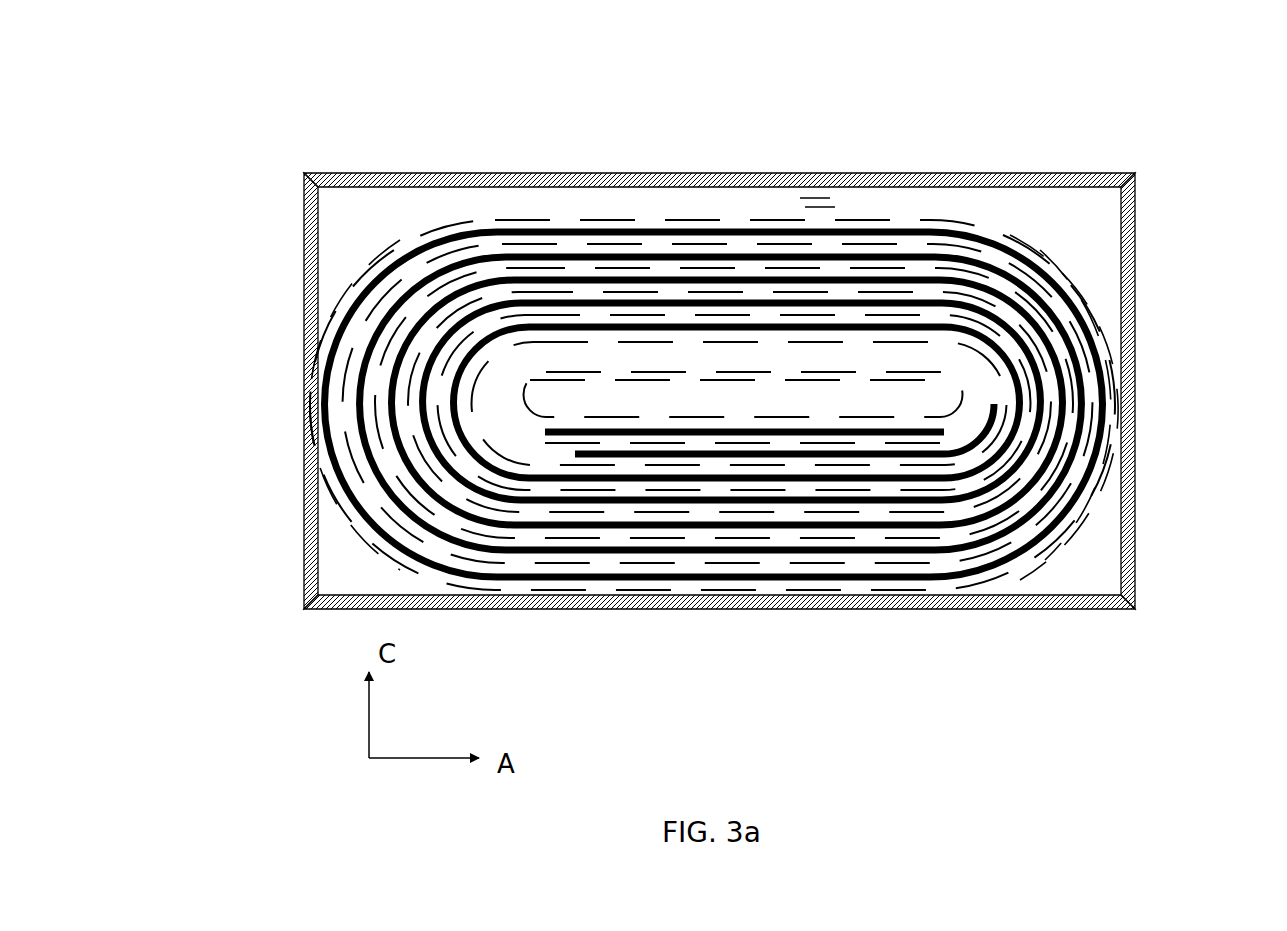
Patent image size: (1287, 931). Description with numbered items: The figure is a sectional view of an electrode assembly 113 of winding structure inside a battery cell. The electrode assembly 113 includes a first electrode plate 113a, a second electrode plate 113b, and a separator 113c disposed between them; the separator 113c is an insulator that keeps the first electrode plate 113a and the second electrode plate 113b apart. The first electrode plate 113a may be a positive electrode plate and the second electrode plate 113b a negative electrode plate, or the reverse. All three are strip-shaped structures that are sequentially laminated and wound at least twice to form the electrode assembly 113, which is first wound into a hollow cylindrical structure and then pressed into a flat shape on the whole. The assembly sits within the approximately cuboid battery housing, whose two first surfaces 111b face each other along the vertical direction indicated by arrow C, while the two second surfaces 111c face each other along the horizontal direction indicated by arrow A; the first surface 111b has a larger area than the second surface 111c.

The first surface 111b is at (905, 173).
The second surface 111c is at (305, 372).
The electrode assembly 113 is at (522, 200).
The first electrode plate 113a is at (1050, 280).
The second electrode plate 113b is at (1060, 465).
The separator 113c is at (1095, 345).